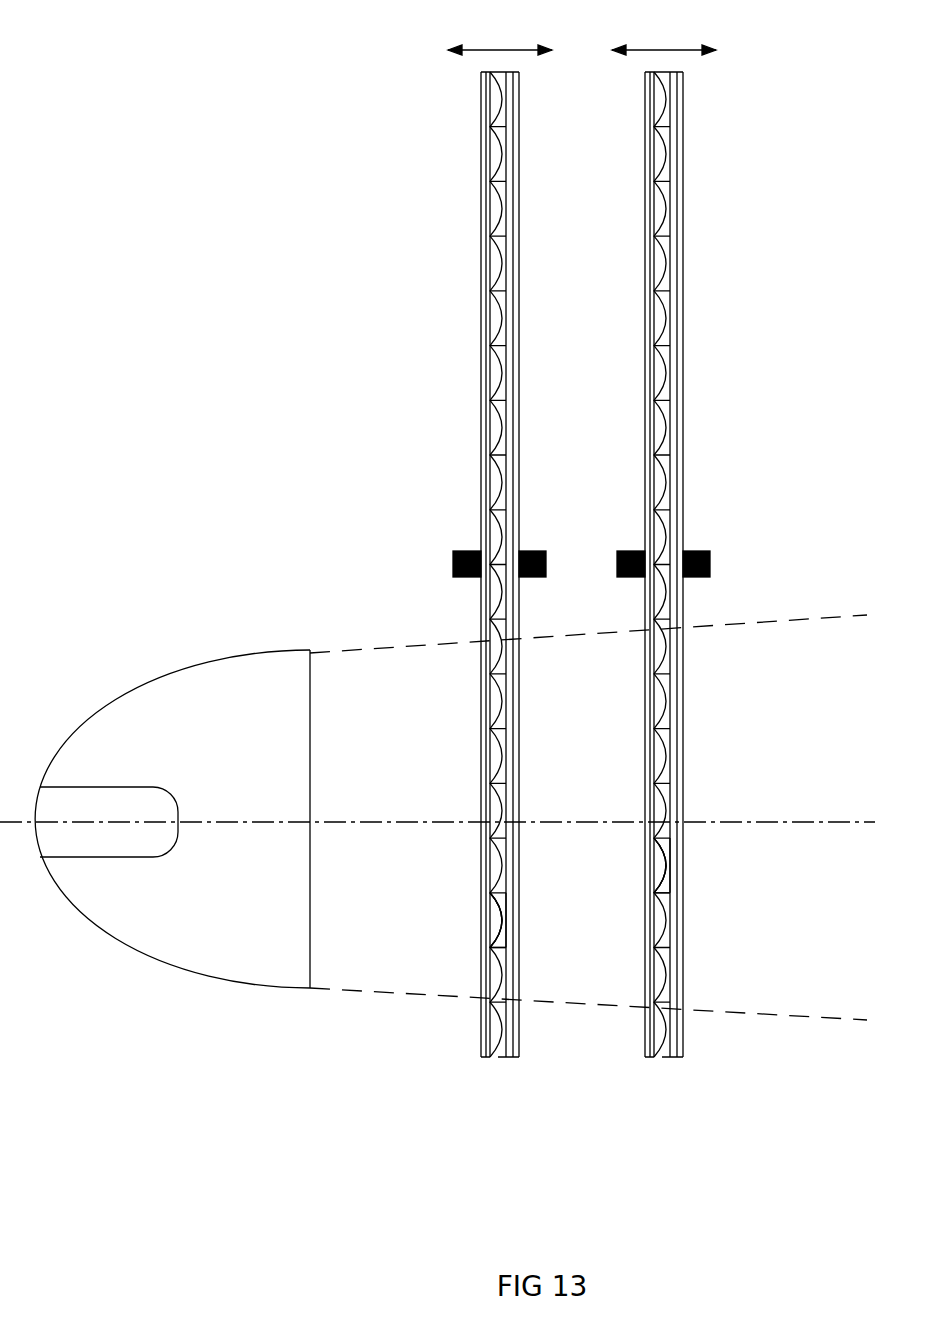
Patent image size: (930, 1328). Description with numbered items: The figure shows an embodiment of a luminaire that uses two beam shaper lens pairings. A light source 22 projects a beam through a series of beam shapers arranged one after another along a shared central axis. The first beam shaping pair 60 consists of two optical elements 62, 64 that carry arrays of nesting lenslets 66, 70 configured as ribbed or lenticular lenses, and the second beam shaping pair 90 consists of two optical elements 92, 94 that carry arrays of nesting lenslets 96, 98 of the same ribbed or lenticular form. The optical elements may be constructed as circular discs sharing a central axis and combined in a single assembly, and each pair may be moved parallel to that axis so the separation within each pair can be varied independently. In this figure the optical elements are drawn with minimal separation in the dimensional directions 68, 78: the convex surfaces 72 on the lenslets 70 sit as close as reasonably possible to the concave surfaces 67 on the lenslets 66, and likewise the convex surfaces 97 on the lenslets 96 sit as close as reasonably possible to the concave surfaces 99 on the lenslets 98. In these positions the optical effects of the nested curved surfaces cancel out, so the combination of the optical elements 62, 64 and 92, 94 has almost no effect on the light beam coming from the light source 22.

The light source 22 is at (90, 842).
The first beam shaping pair 60 is at (498, 608).
The optical element 62 is at (518, 1063).
The optical element 64 is at (483, 1063).
The nesting lenslets 66 is at (508, 940).
The concave surfaces 67 is at (508, 911).
The dimensional direction 68 is at (500, 37).
The nesting lenslets 70 is at (497, 932).
The convex surfaces 72 is at (500, 905).
The dimensional direction 78 is at (664, 37).
The second beam shaping pair 90 is at (661, 608).
The optical element 92 is at (647, 1063).
The optical element 94 is at (682, 1063).
The nesting lenslets 96 is at (663, 876).
The convex surfaces 97 is at (663, 849).
The nesting lenslets 98 is at (677, 884).
The concave surfaces 99 is at (675, 848).